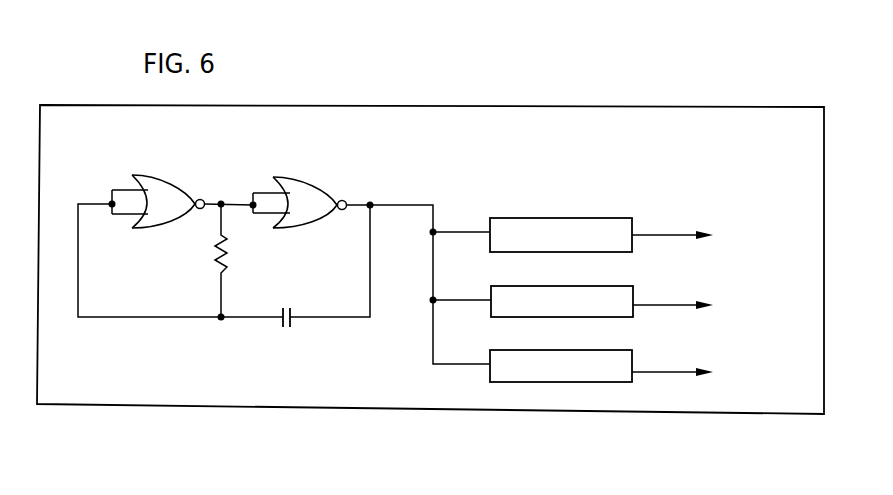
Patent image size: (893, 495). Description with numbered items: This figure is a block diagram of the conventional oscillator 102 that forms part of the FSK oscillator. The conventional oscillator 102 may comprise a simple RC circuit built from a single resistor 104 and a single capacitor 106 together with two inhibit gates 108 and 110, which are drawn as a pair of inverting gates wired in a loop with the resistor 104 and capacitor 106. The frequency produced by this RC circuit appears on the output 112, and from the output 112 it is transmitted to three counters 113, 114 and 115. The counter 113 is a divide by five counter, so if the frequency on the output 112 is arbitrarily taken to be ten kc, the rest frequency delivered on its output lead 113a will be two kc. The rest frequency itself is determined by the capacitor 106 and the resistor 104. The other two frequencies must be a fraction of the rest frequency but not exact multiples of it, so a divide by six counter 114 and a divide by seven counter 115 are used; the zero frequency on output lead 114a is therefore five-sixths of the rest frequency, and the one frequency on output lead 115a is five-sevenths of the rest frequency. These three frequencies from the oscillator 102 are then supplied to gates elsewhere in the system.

The conventional oscillator 102 is at (153, 413).
The resistor 104 is at (229, 247).
The capacitor 106 is at (293, 311).
The inhibit gate 108 is at (163, 178).
The inhibit gate 110 is at (298, 182).
The output 112 is at (382, 205).
The divide by five counter 113 is at (527, 218).
The divide by six counter 114 is at (532, 286).
The divide by seven counter 115 is at (525, 350).
The divide-by-5 counter output (F REST) 113a is at (650, 235).
The divide-by-6 counter output (F O) 114a is at (642, 305).
The divide-by-7 counter output (F 1) 115a is at (642, 372).